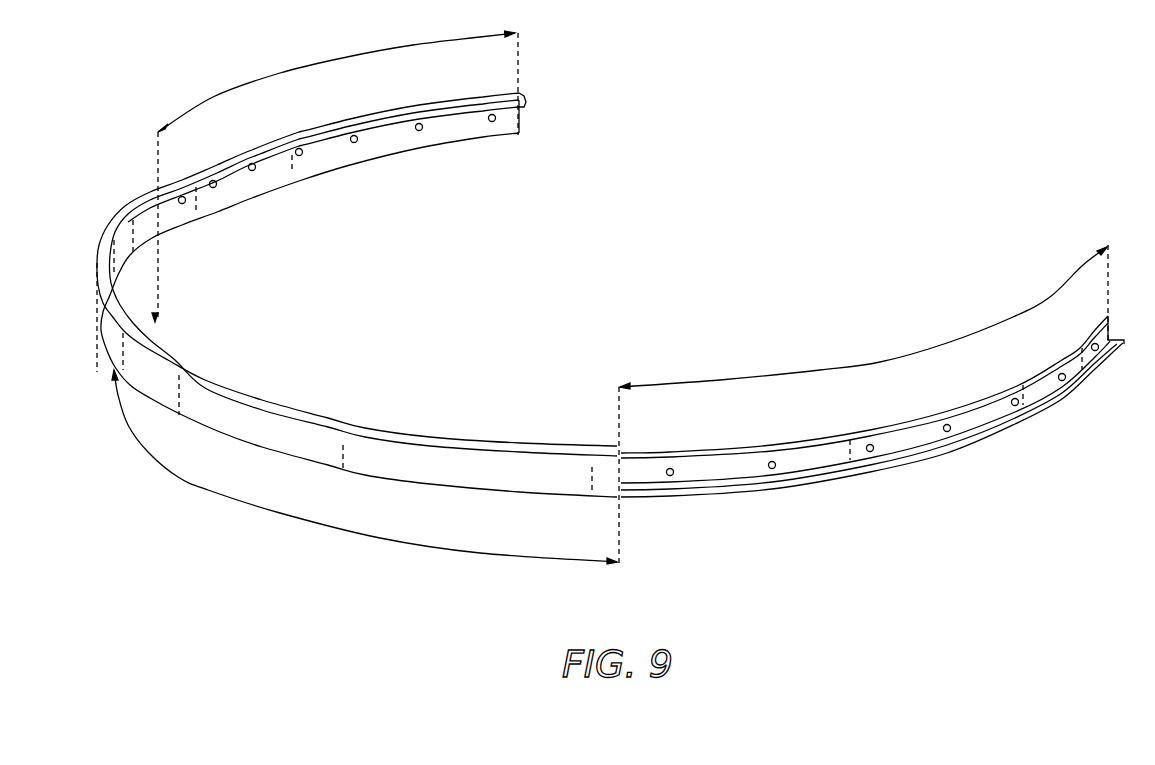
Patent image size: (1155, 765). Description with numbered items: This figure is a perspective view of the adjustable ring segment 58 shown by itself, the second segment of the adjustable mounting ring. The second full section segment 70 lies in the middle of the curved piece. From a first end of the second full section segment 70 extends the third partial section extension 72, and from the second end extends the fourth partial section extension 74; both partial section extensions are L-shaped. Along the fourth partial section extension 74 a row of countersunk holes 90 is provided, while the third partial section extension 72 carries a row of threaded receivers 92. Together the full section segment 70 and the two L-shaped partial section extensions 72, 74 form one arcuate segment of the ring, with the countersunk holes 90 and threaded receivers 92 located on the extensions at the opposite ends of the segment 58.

The adjustable ring segment 58 is at (610, 303).
The second full section segment 70 is at (272, 515).
The third partial section extension 72 is at (872, 389).
The fourth partial section extension 74 is at (320, 176).
The countersunk holes 90 is at (337, 192).
The threaded receivers 92 is at (873, 451).